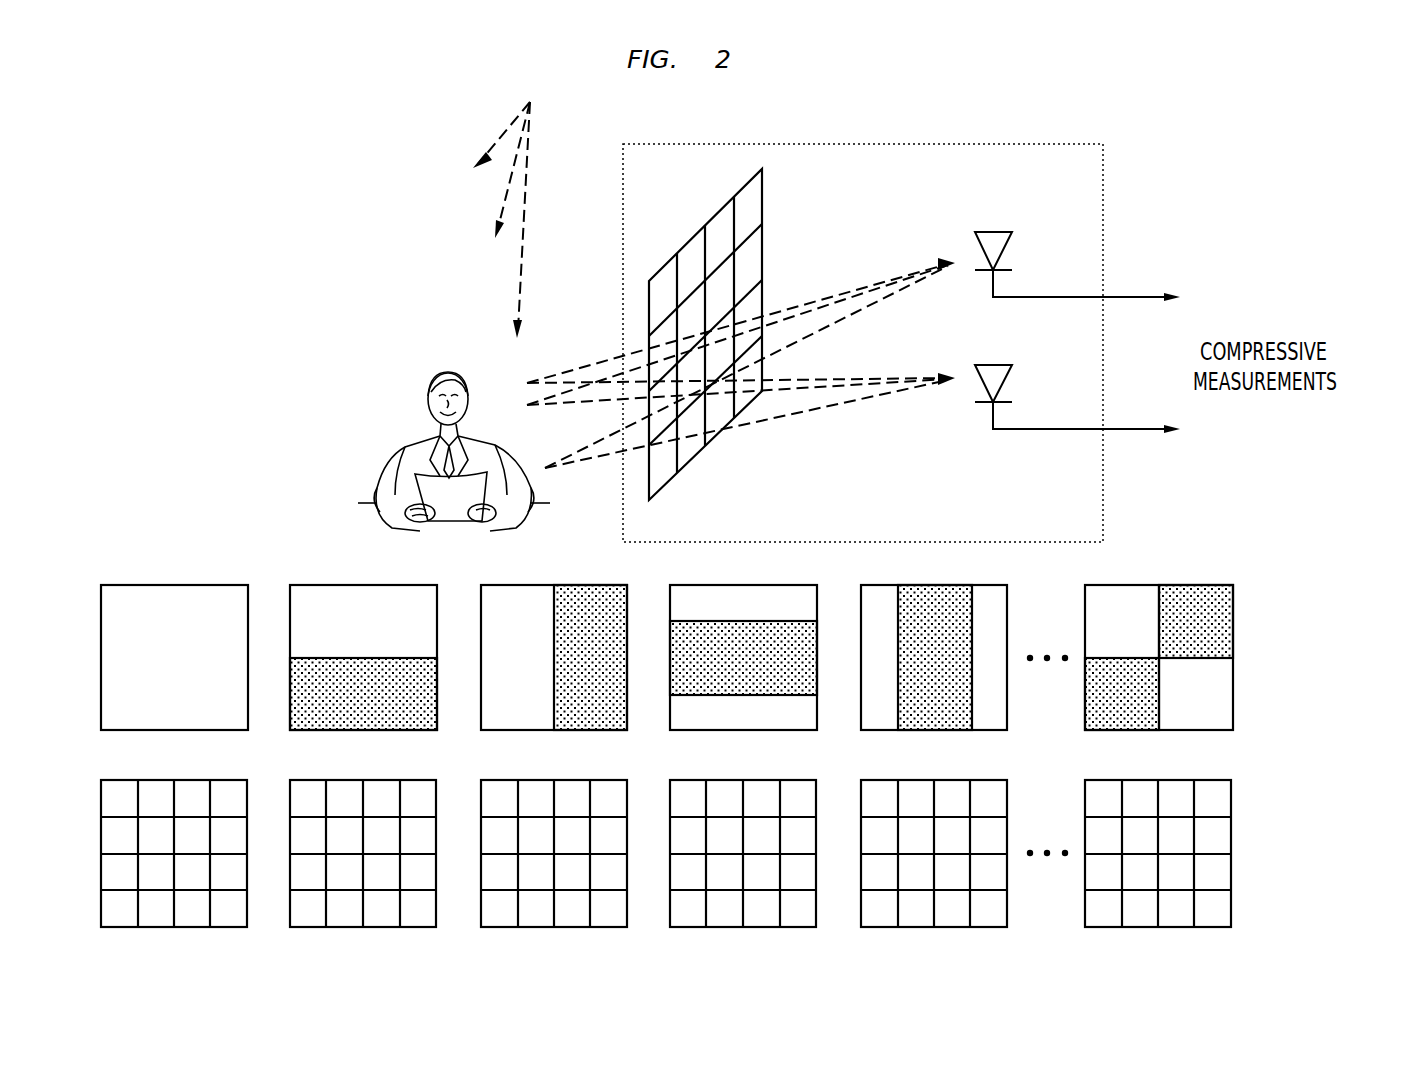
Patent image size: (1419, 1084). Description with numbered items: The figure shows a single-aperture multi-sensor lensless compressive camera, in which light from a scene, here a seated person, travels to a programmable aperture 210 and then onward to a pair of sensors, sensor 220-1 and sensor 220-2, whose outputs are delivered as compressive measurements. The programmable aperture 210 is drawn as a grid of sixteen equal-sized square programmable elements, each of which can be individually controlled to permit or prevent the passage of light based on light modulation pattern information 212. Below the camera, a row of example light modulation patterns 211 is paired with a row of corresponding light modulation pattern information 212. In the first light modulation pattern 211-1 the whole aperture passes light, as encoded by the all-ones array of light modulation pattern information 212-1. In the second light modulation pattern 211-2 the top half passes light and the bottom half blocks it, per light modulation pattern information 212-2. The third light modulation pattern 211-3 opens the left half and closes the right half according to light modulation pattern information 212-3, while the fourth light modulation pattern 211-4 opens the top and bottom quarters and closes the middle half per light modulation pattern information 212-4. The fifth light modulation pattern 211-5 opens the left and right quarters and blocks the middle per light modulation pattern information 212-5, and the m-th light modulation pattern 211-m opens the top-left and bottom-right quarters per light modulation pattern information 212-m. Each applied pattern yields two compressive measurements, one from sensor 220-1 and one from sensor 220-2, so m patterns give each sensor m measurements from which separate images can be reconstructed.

The programmable aperture 210 is at (690, 466).
The sensor 220-1 is at (993, 232).
The sensor 220-2 is at (993, 365).
The light modulation patterns 211 is at (750, 720).
The first light modulation pattern 211-1 is at (248, 728).
The second light modulation pattern 211-2 is at (437, 728).
The third light modulation pattern 211-3 is at (627, 728).
The fourth light modulation pattern 211-4 is at (817, 728).
The fifth light modulation pattern 211-5 is at (1007, 728).
The m-th light modulation pattern 211-m is at (1263, 585).
The light modulation pattern information 212 is at (751, 871).
The first light modulation pattern information 212-1 is at (247, 925).
The second light modulation pattern information 212-2 is at (436, 925).
The third light modulation pattern information 212-3 is at (627, 925).
The fourth light modulation pattern information 212-4 is at (816, 925).
The fifth light modulation pattern information 212-5 is at (1007, 925).
The m-th light modulation pattern information 212-m is at (1263, 778).